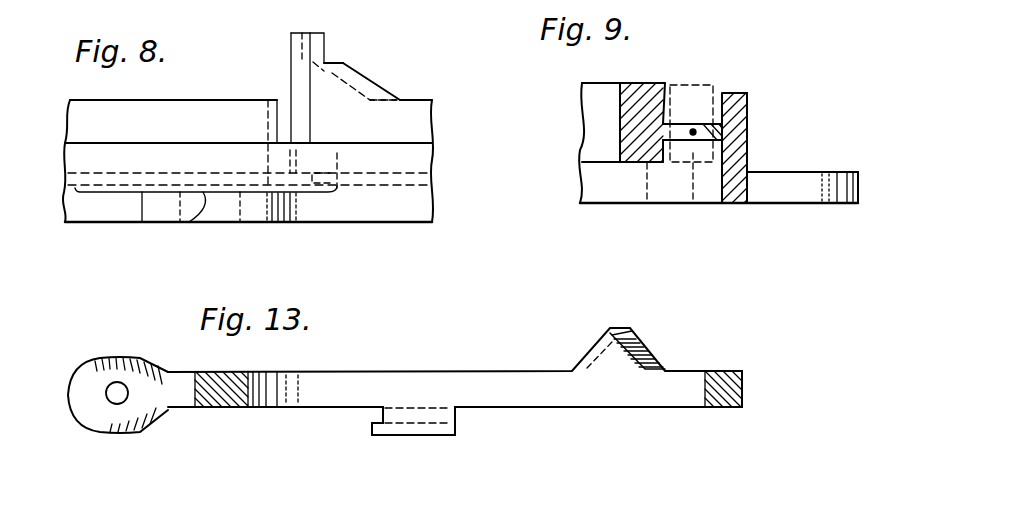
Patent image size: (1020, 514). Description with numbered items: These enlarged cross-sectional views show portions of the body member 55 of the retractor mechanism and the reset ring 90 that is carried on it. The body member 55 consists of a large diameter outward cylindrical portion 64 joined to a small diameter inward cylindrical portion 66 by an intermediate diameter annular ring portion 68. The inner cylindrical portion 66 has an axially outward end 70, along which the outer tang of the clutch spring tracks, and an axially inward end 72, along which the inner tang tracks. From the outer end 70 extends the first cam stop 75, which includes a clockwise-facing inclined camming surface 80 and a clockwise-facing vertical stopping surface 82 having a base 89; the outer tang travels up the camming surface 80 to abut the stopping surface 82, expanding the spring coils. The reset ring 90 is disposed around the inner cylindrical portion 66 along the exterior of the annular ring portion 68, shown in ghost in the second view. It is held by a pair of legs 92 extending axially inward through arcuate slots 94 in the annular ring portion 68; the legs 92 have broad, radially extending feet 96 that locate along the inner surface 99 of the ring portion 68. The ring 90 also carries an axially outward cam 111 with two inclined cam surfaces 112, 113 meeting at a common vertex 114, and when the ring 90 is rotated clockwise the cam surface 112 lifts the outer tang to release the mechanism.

In FIG. 8, the body member 55 is at (130, 230).
In FIG. 8, the large diameter outward cylindrical portion 64 is at (226, 212).
In FIG. 9, the large diameter outward cylindrical portion 64 is at (733, 205).
In FIG. 8, the small diameter inward cylindrical portion 66 is at (243, 115).
In FIG. 9, the small diameter inward cylindrical portion 66 is at (640, 68).
In FIG. 8, the intermediate diameter annular ring portion 68 is at (153, 153).
In FIG. 9, the intermediate diameter annular ring portion 68 is at (716, 120).
In FIG. 8, the axially outward end 70 is at (88, 100).
In FIG. 9, the axially outward end 70 is at (653, 85).
In FIG. 8, the axially inward end 72 is at (188, 215).
In FIG. 9, the axially inward end 72 is at (620, 165).
In FIG. 8, the first cam stop 75 is at (343, 108).
In FIG. 8, the inclined camming surface 80 is at (397, 90).
In FIG. 8, the vertical stopping surface 82 is at (325, 62).
In FIG. 8, the base of the stopping surface 89 is at (345, 63).
In FIG. 9, the reset ring 90 is at (698, 85).
In FIG. 13, the reset ring 90 is at (557, 396).
In FIG. 9, the legs 92 is at (647, 200).
In FIG. 13, the legs 92 is at (433, 418).
In FIG. 9, the arcuate slots 94 is at (722, 131).
In FIG. 9, the feet 96 is at (693, 200).
In FIG. 13, the feet 96 is at (378, 434).
In FIG. 9, the inner surface 99 is at (700, 139).
In FIG. 13, the cam 111 is at (620, 356).
In FIG. 13, the counterclockwise-facing inclined cam surface 112 is at (643, 347).
In FIG. 13, the inclined cam surface 113 is at (585, 353).
In FIG. 13, the vertex 114 is at (630, 310).